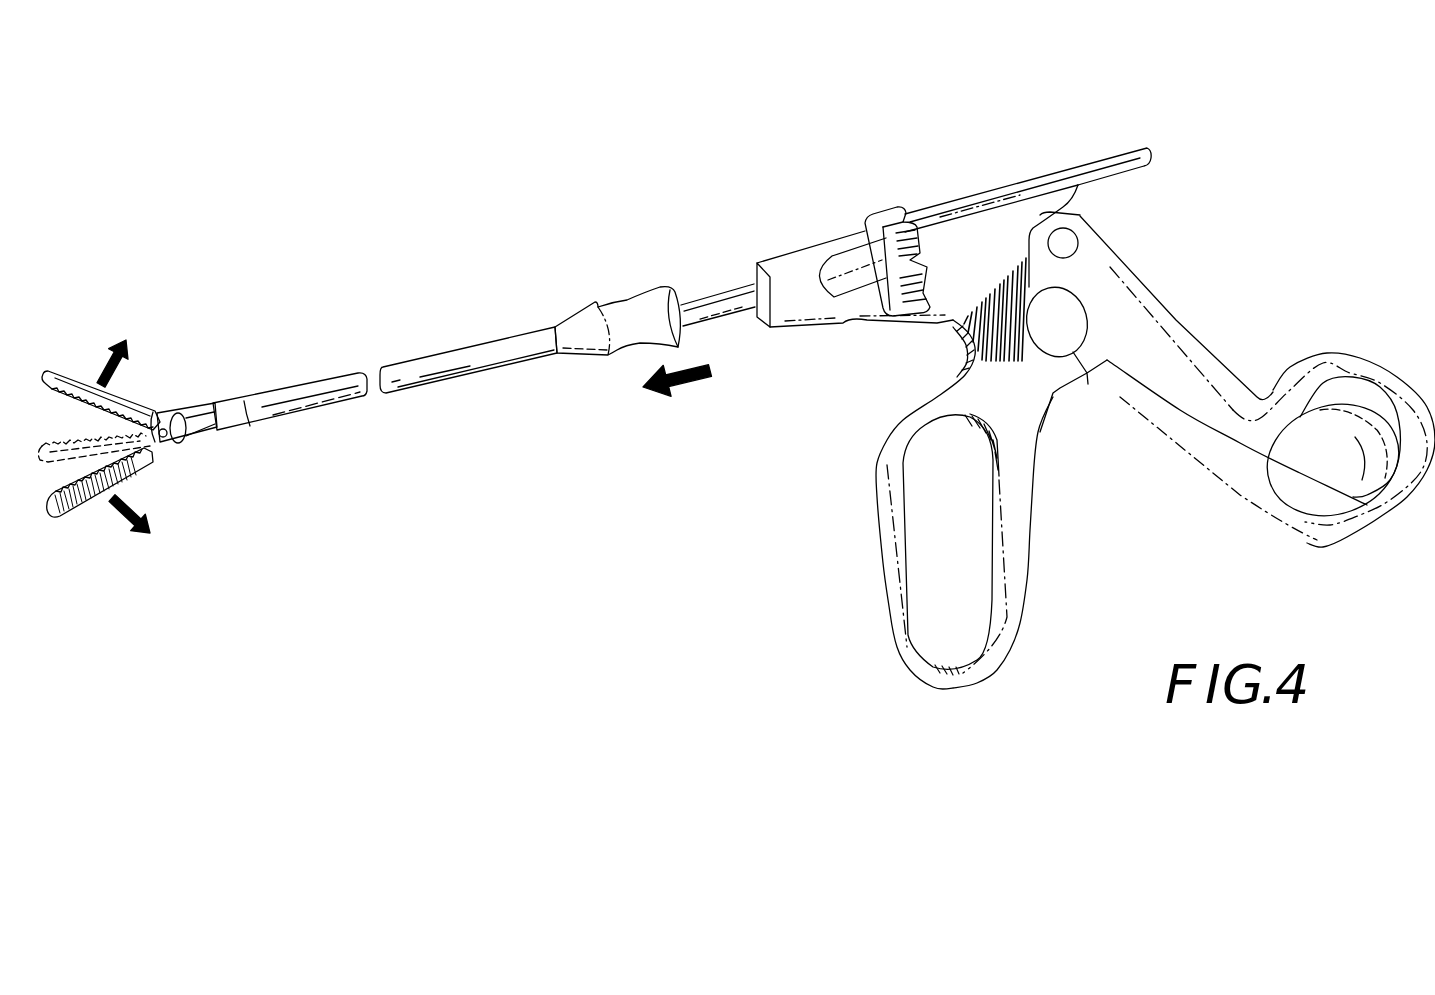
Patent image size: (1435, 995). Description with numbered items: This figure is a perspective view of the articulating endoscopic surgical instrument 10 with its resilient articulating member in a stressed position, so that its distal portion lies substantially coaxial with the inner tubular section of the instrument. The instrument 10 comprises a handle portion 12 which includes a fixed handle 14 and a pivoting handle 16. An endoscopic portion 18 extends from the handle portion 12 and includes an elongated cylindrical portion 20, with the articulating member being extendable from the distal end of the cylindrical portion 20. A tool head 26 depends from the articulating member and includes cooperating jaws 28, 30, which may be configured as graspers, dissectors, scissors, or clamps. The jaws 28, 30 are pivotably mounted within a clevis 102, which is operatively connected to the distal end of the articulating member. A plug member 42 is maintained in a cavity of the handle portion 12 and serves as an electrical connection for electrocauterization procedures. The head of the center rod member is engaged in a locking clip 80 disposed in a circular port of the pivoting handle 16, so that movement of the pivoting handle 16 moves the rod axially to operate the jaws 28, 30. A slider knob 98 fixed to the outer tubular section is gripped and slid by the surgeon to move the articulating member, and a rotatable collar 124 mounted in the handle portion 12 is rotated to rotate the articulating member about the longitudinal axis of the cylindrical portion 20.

The articulating endoscopic surgical instrument 10 is at (465, 141).
The handle portion 12 is at (932, 226).
The fixed handle 14 is at (985, 504).
The pivoting handle 16 is at (1257, 381).
The endoscopic portion 18 is at (536, 417).
The elongated cylindrical portion 20 is at (290, 369).
The tool head 26 is at (102, 395).
The cooperating jaw 28 is at (109, 394).
The cooperating jaw 30 is at (100, 515).
The plug member 42 is at (1040, 157).
The locking clip 80 is at (1103, 230).
The slider knob 98 is at (633, 313).
The clevis 102 is at (207, 451).
The rotatable collar 124 is at (892, 221).